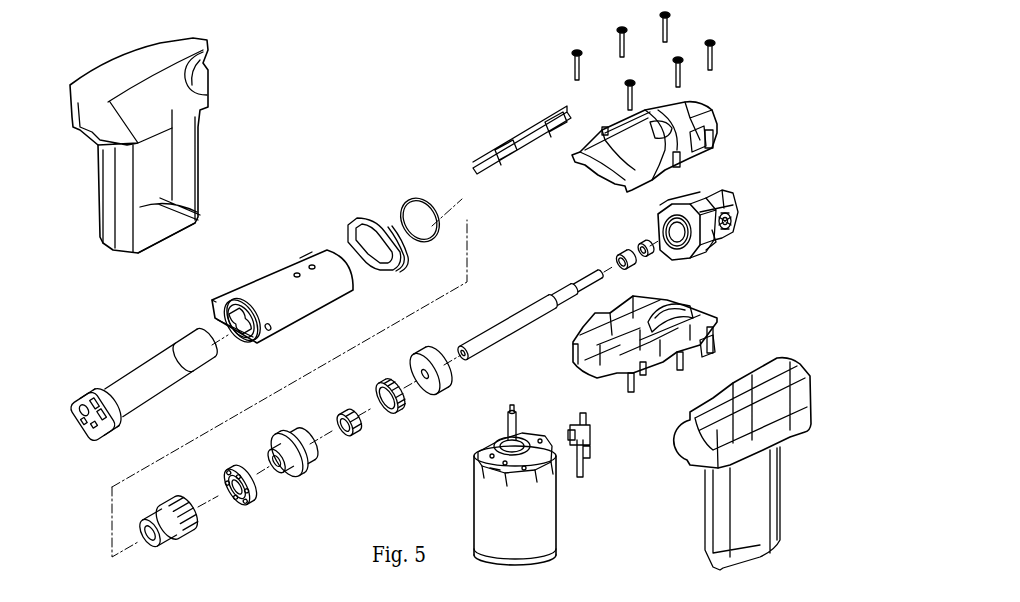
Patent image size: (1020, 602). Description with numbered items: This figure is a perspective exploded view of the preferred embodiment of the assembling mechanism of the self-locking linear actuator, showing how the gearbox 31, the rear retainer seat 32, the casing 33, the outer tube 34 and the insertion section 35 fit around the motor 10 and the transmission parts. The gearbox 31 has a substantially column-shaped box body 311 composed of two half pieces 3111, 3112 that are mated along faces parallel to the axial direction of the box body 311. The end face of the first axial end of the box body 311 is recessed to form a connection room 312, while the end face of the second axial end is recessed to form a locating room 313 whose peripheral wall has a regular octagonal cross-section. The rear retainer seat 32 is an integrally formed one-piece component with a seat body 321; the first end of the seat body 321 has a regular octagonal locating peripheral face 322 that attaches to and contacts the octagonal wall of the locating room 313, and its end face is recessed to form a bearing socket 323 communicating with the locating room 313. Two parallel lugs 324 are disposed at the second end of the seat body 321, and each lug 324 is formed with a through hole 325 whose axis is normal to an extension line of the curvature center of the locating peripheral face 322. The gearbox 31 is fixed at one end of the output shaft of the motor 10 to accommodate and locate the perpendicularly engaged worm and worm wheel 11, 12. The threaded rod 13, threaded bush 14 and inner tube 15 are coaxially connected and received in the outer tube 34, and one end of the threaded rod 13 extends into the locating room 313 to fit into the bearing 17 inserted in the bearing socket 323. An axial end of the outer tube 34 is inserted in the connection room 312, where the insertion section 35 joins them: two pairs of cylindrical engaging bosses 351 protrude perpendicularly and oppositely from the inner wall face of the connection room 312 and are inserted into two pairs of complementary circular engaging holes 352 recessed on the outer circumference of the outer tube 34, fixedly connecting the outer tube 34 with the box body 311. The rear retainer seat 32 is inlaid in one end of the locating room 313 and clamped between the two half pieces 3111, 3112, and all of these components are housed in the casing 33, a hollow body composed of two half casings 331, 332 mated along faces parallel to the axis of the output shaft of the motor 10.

The motor 10 is at (547, 527).
The worm 11 is at (507, 437).
The worm wheel 12 is at (308, 468).
The threaded rod 13 is at (505, 320).
The threaded bush 14 is at (167, 538).
The inner tube 15 is at (135, 375).
The bearing 17 is at (430, 350).
The gearbox 31 is at (626, 102).
The box body 311 is at (712, 120).
The half piece 3111 is at (690, 152).
The half piece 3112 is at (700, 350).
The connection room 312 is at (595, 367).
The locating room 313 is at (687, 310).
The rear retainer seat 32 is at (693, 225).
The seat body 321 is at (716, 240).
The locating peripheral face 322 is at (668, 200).
The bearing socket 323 is at (660, 230).
The lug 324 is at (707, 190).
The through hole 325 is at (737, 228).
The casing 33 is at (773, 440).
The half casing 331 is at (115, 67).
The half casing 332 is at (812, 415).
The outer tube 34 is at (262, 278).
The insertion section 35 is at (305, 252).
The engaging boss 351 is at (620, 373).
The engaging hole 352 is at (297, 273).